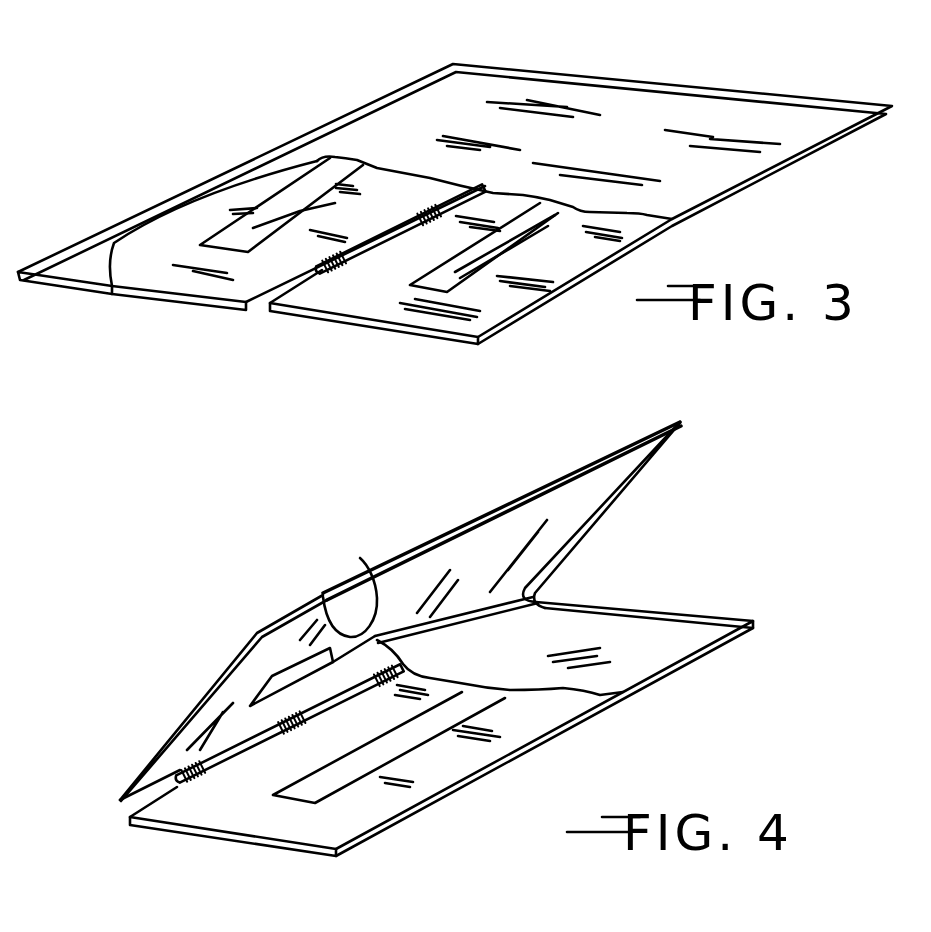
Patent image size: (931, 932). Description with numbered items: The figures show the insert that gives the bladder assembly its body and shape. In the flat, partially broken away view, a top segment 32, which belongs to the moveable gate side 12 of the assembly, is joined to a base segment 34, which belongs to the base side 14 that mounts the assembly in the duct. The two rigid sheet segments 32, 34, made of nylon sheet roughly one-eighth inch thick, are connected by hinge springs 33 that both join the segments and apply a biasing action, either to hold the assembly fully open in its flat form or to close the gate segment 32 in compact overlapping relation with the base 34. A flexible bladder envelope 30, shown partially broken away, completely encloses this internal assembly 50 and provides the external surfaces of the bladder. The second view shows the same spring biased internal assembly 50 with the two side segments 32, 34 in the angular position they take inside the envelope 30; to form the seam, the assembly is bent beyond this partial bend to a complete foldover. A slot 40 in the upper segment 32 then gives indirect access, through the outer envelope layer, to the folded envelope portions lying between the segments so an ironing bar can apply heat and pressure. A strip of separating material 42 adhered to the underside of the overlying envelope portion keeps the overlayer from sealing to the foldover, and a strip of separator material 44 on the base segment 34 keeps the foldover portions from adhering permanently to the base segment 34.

In FIG. 3, the side of the assembly 12 is at (423, 122).
In FIG. 3, the opposite side of the assembly 14 is at (717, 133).
In FIG. 3, the bladder envelope 30 is at (590, 122).
In FIG. 4, the bladder envelope 30 is at (583, 654).
In FIG. 3, the top segment 32 is at (175, 298).
In FIG. 4, the top segment 32 is at (277, 640).
In FIG. 3, the hinge springs 33 is at (430, 222).
In FIG. 4, the hinge springs 33 is at (383, 686).
In FIG. 3, the base segment 34 is at (385, 328).
In FIG. 4, the base segment 34 is at (400, 817).
In FIG. 3, the slot 40 is at (243, 240).
In FIG. 4, the slot 40 is at (277, 678).
In FIG. 4, the strip of separating material 42 is at (362, 560).
In FIG. 4, the strip of separator material 44 is at (298, 796).
In FIG. 3, the internal assembly 50 is at (112, 253).